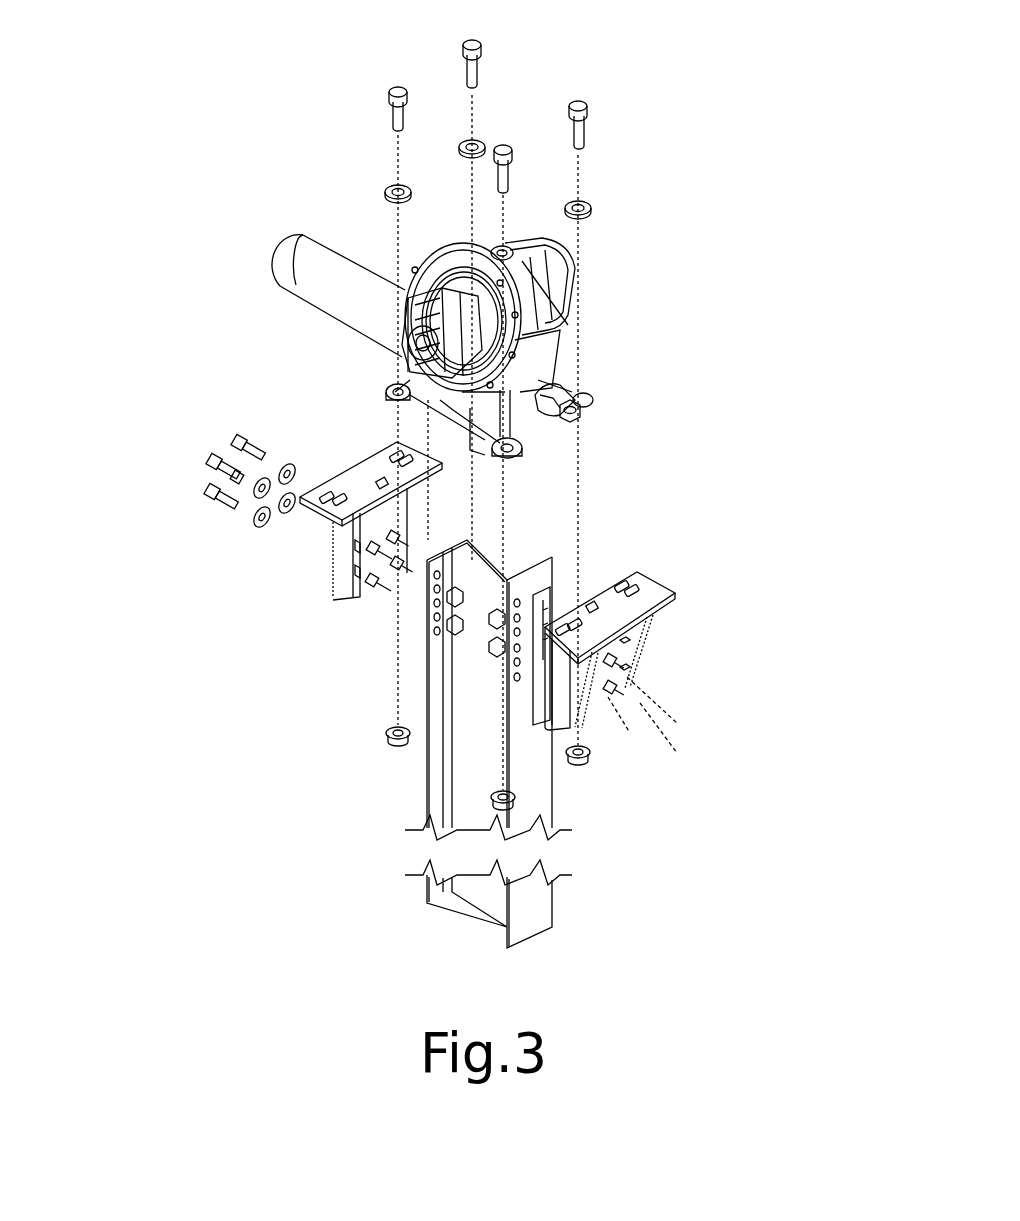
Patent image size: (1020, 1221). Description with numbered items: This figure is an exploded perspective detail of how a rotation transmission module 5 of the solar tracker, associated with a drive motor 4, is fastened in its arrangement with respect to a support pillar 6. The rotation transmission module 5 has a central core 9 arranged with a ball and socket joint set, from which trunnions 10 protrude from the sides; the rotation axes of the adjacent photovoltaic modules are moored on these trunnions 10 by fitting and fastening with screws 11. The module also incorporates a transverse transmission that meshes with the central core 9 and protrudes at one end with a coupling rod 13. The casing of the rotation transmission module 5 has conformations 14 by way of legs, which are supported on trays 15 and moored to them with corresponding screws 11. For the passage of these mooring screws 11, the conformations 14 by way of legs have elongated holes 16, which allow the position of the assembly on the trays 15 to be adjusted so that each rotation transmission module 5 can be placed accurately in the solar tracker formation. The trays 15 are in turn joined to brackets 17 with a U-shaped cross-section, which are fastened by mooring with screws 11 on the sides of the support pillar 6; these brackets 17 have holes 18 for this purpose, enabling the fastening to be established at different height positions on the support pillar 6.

The motor 4 is at (308, 278).
The rotation transmission module 5 is at (470, 260).
The support pillar 6 is at (437, 795).
The central core 9 is at (433, 278).
The trunnion 10 is at (430, 313).
The screw 11 is at (398, 125).
The coupling rod 13 is at (572, 418).
The conformation by way of leg 14 is at (397, 398).
The tray 15 is at (318, 498).
The elongated hole 16 is at (587, 400).
The bracket 17 is at (342, 560).
The hole 18 is at (372, 580).